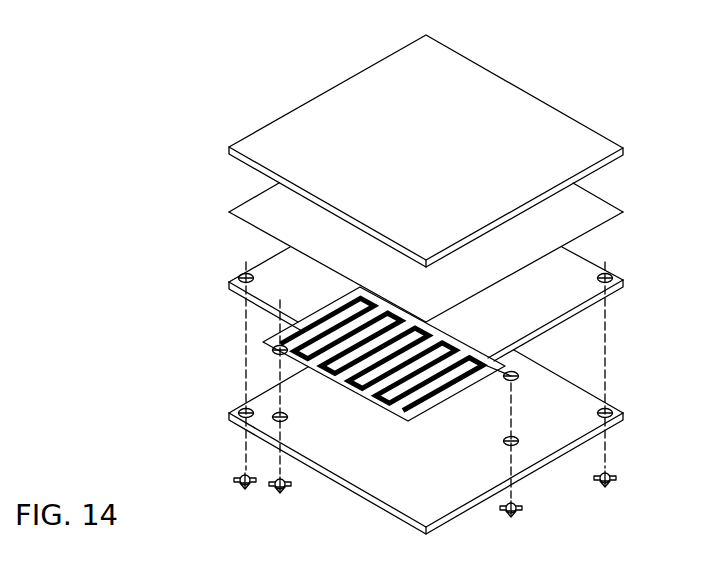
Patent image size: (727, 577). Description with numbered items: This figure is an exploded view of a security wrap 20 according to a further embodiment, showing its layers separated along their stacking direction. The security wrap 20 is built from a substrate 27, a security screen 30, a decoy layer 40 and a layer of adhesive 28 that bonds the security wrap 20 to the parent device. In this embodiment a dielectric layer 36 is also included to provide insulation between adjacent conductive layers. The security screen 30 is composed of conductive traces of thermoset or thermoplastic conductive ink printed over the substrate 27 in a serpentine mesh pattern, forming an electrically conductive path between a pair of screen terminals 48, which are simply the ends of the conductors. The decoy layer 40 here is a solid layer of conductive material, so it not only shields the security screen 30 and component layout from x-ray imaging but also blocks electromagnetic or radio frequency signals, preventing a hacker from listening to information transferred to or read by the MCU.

The security wrap 20 is at (238, 73).
The substrate 27 is at (555, 132).
The decoy layer 40 is at (588, 212).
The dielectric layer 36 is at (577, 278).
The security screen 30 is at (277, 333).
The screen terminals 48 is at (277, 350).
The layer of adhesive 28 is at (577, 407).